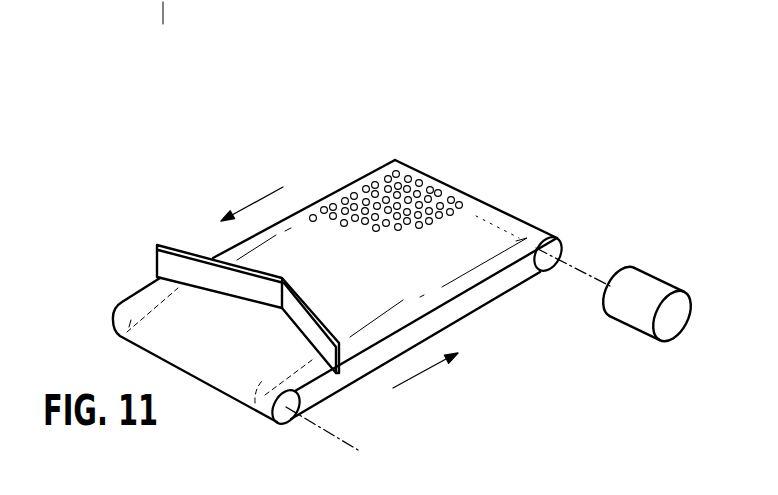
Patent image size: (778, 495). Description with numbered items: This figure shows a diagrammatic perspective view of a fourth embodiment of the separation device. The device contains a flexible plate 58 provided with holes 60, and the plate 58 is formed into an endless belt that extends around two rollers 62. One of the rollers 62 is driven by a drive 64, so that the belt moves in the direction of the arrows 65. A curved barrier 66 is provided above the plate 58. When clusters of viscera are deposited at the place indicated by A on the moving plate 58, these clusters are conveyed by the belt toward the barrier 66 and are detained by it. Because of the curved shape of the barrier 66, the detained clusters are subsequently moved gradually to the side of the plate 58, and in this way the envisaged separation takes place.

The flexible plate 58 is at (327, 204).
The holes 60 is at (405, 177).
The rollers 62 is at (557, 240).
The drive 64 is at (643, 323).
The arrows 65 is at (258, 204).
The curved barrier 66 is at (190, 267).
The place indicated by A is at (483, 176).